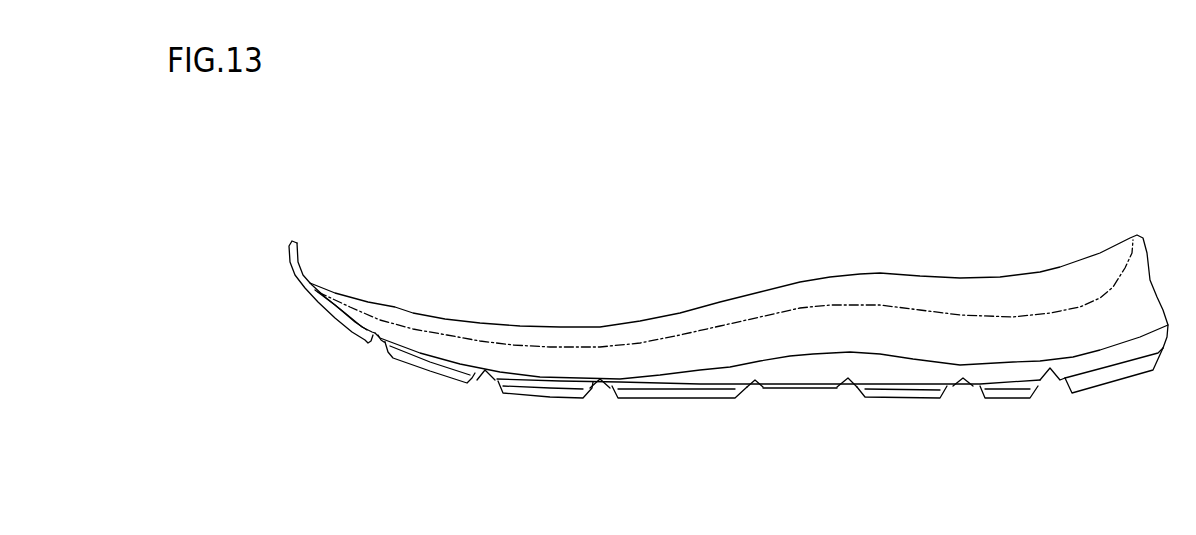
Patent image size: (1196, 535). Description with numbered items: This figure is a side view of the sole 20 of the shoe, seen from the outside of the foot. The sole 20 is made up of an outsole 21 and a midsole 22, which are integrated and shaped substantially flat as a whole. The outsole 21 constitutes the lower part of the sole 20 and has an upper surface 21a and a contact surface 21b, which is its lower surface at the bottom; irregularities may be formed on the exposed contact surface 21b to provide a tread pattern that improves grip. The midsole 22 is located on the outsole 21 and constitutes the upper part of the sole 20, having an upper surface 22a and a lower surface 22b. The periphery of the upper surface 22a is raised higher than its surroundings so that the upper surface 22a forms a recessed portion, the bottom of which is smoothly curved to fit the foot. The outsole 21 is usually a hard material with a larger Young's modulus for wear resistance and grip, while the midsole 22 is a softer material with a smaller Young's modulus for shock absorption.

The sole 20 is at (330, 189).
The outsole 21 is at (884, 367).
The upper surface 21a is at (680, 377).
The contact surface 21b is at (711, 398).
The midsole 22 is at (842, 327).
The upper surface 22a is at (526, 345).
The lower surface 22b is at (557, 378).